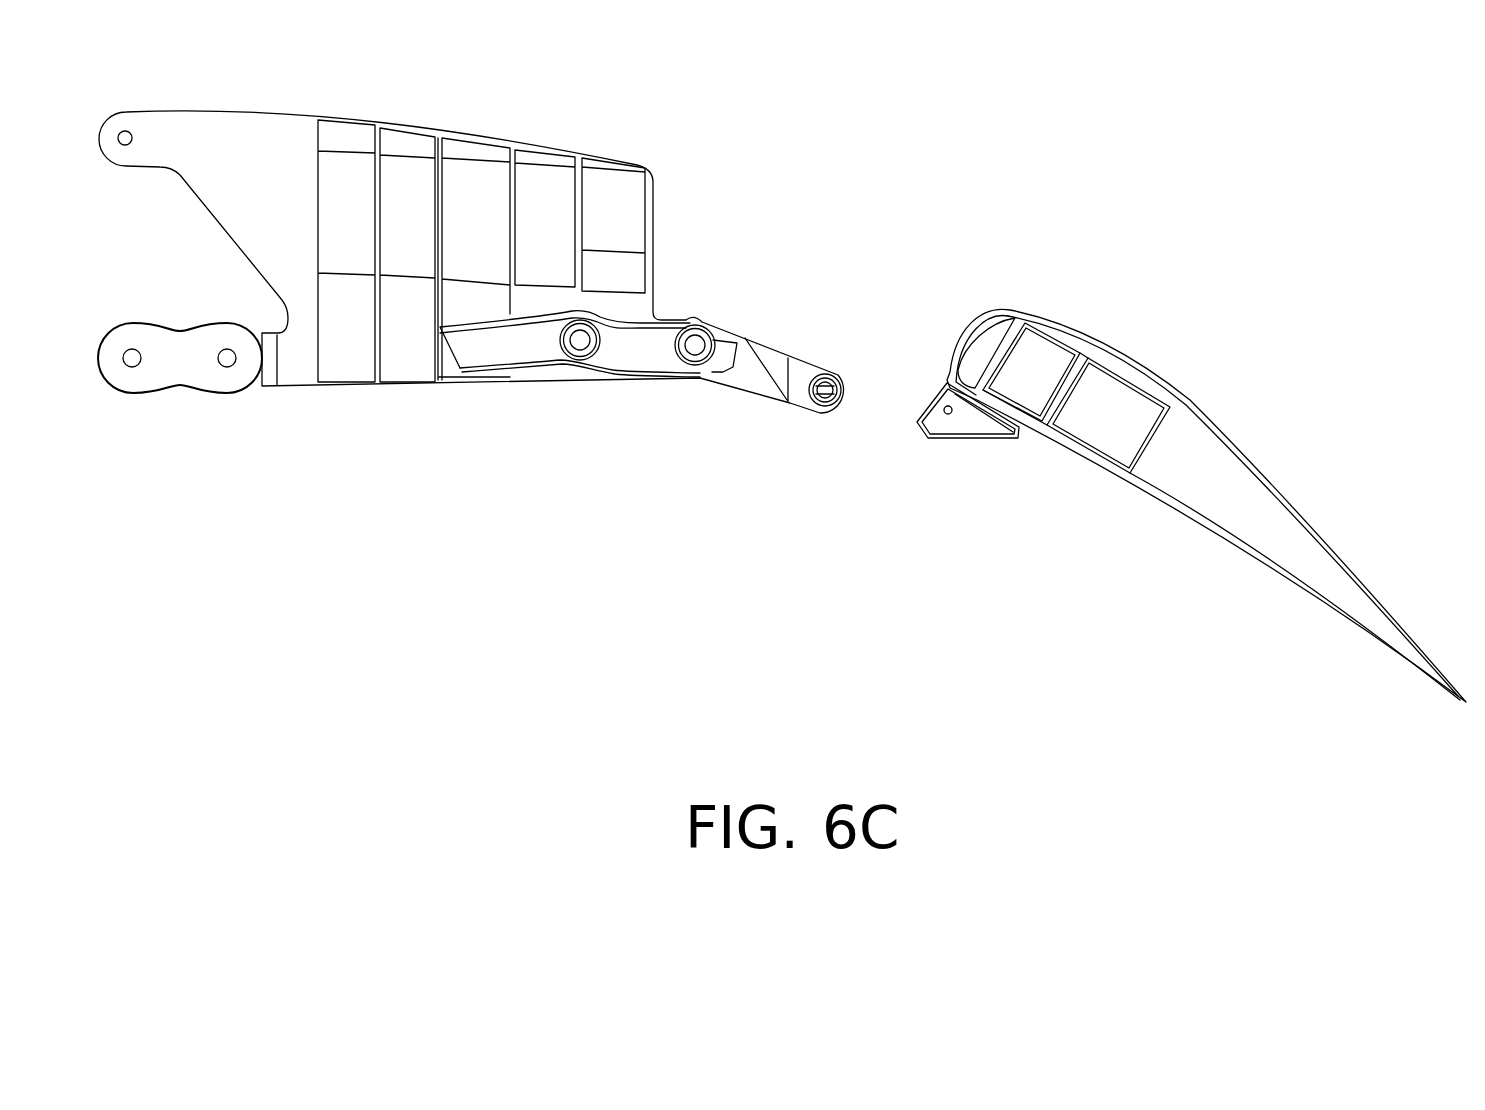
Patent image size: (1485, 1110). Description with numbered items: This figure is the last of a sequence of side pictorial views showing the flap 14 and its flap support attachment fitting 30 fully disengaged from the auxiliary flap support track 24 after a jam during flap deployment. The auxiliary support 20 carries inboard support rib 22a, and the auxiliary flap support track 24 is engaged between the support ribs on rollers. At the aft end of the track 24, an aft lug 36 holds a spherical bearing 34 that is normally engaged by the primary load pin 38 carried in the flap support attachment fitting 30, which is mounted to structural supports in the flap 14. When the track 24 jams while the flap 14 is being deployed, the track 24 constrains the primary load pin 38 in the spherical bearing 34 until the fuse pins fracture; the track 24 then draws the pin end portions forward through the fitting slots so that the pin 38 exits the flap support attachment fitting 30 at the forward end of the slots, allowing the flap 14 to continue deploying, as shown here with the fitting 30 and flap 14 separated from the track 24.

The auxiliary support 20 is at (678, 222).
The inboard support rib 22a is at (335, 382).
The auxiliary flap support track 24 is at (765, 397).
The aft lug 36 is at (800, 372).
The spherical bearing 34 is at (818, 404).
The primary load pin 38 is at (825, 403).
The flap 14 is at (1188, 403).
The flap support attachment fitting 30 is at (950, 442).